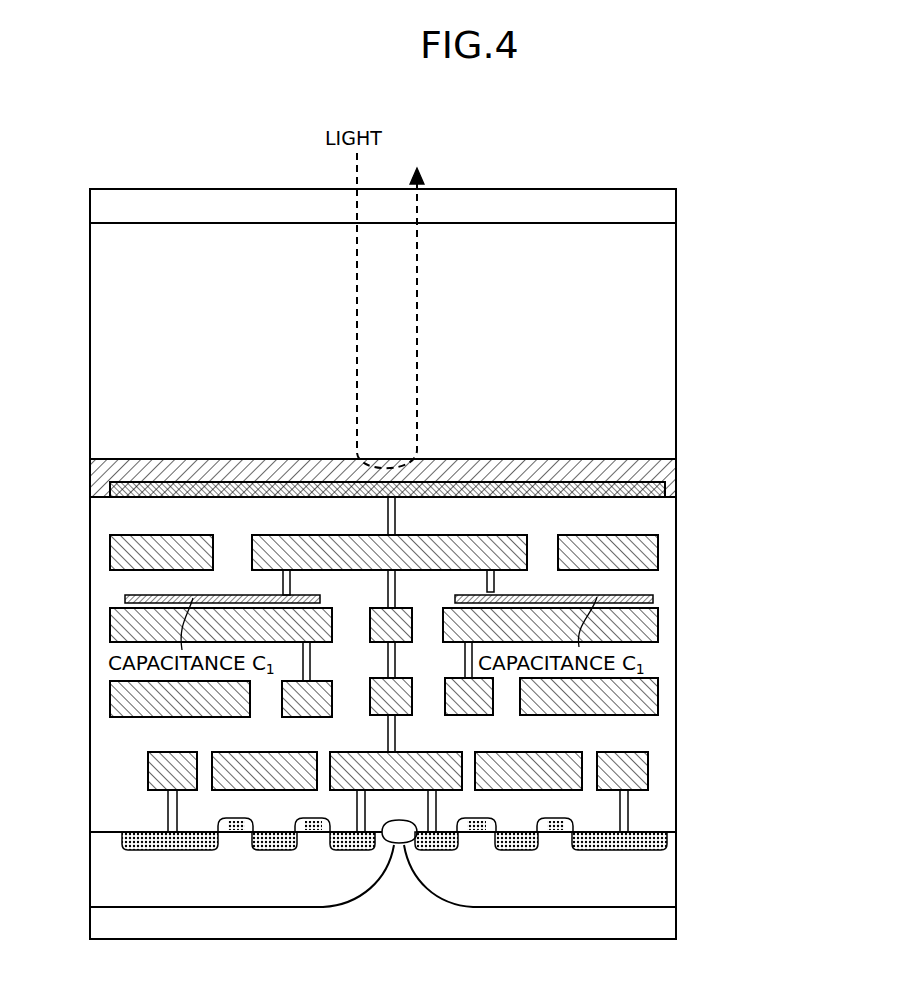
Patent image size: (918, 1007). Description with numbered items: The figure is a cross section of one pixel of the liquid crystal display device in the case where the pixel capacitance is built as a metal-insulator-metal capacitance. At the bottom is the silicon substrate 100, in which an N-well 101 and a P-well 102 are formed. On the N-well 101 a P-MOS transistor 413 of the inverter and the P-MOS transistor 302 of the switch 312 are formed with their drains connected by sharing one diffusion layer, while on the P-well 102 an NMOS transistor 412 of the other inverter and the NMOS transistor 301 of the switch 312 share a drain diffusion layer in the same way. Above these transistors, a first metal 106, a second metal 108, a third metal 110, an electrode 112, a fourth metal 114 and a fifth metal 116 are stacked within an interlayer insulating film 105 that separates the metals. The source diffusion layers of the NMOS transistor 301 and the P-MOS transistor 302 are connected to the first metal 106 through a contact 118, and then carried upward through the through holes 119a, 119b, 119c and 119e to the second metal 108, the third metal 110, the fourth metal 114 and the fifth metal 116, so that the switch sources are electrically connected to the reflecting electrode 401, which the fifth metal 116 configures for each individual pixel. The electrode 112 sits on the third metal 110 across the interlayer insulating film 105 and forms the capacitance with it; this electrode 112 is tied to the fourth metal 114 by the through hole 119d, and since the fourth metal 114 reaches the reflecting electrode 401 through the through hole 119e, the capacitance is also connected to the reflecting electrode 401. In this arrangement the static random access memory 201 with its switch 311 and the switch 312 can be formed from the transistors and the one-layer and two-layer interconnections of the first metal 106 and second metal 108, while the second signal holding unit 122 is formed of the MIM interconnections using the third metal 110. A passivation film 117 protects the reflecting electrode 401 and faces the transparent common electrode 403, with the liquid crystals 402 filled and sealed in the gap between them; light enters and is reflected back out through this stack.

The silicon substrate 100 is at (676, 923).
The N-well 101 is at (223, 907).
The P-well 102 is at (490, 907).
The interlayer insulating film 105 is at (665, 738).
The first metal 106 is at (648, 770).
The second metal 108 is at (650, 694).
The third metal 110 is at (650, 626).
The electrode 112 is at (653, 598).
The fourth metal 114 is at (650, 552).
The fifth metal 116 is at (655, 498).
The passivation film 117 is at (668, 468).
The contact 118 is at (366, 808).
The through hole 119a is at (396, 740).
The through hole 119b is at (396, 661).
The through hole 119c is at (396, 586).
The through hole 119d is at (282, 585).
The through hole 119e is at (396, 512).
The second signal holding unit 122 is at (740, 535).
The static random access memory 201 is at (445, 765).
The NMOS transistor 301 is at (542, 851).
The P-MOS transistor 302 is at (377, 859).
The switch 311 is at (740, 862).
The switch 312 is at (442, 765).
The reflecting electrode 401 is at (740, 453).
The liquid crystals 402 is at (667, 323).
The common electrode 403 is at (667, 204).
The NMOS transistor 412 is at (668, 859).
The P-MOS transistor 413 is at (298, 851).